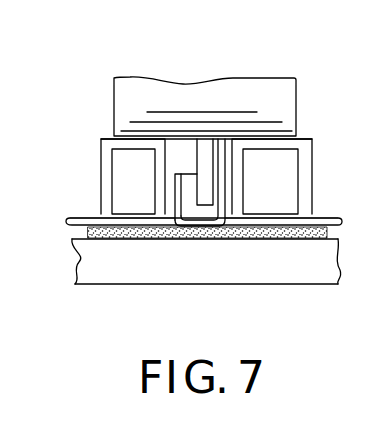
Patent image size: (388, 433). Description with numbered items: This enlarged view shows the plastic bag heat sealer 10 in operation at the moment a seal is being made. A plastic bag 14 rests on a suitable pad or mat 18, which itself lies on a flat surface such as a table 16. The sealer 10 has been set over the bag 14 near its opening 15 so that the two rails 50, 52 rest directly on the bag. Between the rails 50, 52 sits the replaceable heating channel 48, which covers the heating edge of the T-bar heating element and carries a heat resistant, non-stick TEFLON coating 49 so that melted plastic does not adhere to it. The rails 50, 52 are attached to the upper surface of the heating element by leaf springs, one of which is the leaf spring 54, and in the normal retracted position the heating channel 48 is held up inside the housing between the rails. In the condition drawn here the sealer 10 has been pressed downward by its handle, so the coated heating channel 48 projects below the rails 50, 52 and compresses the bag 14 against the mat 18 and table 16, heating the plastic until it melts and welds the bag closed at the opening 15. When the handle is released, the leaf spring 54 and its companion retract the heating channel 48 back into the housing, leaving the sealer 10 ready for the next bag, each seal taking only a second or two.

The plastic bag heat sealer 10 is at (301, 104).
The leaf spring 54 is at (113, 100).
The rail 50 is at (101, 181).
The rail 52 is at (312, 170).
The heating channel 48 is at (216, 213).
The non-stick coating 49 is at (168, 216).
The plastic bag 14 is at (82, 218).
The opening 15 is at (338, 217).
The pad or mat 18 is at (328, 232).
The table 16 is at (307, 285).